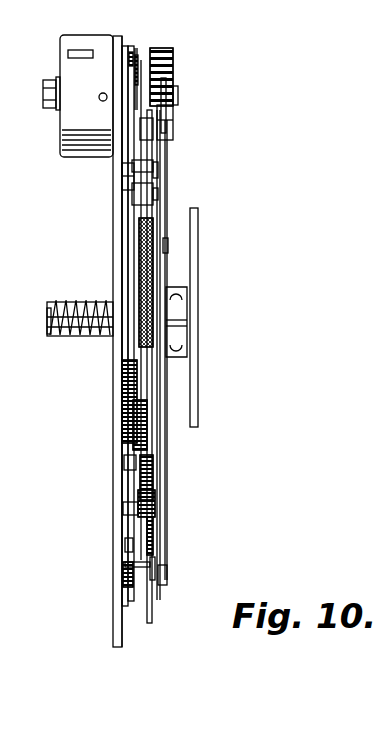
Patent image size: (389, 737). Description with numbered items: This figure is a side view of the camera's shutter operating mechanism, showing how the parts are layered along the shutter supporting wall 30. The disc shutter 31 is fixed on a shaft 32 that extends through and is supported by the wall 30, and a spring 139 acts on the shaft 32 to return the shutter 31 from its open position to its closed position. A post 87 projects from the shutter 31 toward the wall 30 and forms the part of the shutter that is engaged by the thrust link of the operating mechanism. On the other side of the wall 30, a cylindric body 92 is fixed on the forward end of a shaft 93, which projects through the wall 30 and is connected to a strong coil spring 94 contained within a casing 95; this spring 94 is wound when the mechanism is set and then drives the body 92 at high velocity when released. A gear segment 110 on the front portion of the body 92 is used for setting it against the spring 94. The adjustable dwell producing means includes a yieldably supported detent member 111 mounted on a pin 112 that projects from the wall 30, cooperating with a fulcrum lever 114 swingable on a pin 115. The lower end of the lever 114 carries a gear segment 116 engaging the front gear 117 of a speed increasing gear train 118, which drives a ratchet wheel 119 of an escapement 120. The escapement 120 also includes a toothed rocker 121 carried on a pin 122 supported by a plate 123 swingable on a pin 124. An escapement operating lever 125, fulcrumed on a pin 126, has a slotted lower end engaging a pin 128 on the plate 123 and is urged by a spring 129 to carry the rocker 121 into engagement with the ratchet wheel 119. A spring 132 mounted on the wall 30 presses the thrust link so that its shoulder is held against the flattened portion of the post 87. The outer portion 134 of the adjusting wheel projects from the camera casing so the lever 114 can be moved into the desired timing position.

The shutter supporting wall 30 is at (116, 418).
The disc shutter 31 is at (196, 365).
The shaft 32 is at (56, 302).
The post 87 is at (176, 290).
The cylindric body 92 is at (175, 66).
The shaft 93 is at (178, 95).
The coil spring 94 is at (85, 50).
The casing 95 is at (60, 80).
The gear segment 110 is at (170, 49).
The detent member 111 is at (131, 50).
The pin 112 is at (137, 58).
The fulcrum lever 114 is at (127, 118).
The pin 115 is at (124, 176).
The gear segment 116 is at (127, 380).
The front gear 117 is at (130, 402).
The speed increasing gear train 118 is at (153, 450).
The ratchet wheel 119 is at (150, 512).
The escapement 120 is at (152, 603).
The toothed rocker 121 is at (151, 542).
The pin 122 is at (156, 562).
The plate 123 is at (125, 565).
The pin 124 is at (127, 542).
The escapement operating lever 125 is at (156, 168).
The pin 126 is at (169, 245).
The pin 128 is at (168, 574).
The spring 129 is at (166, 127).
The spring 132 is at (150, 196).
The outer portion 134 is at (152, 268).
The spring 139 is at (56, 336).